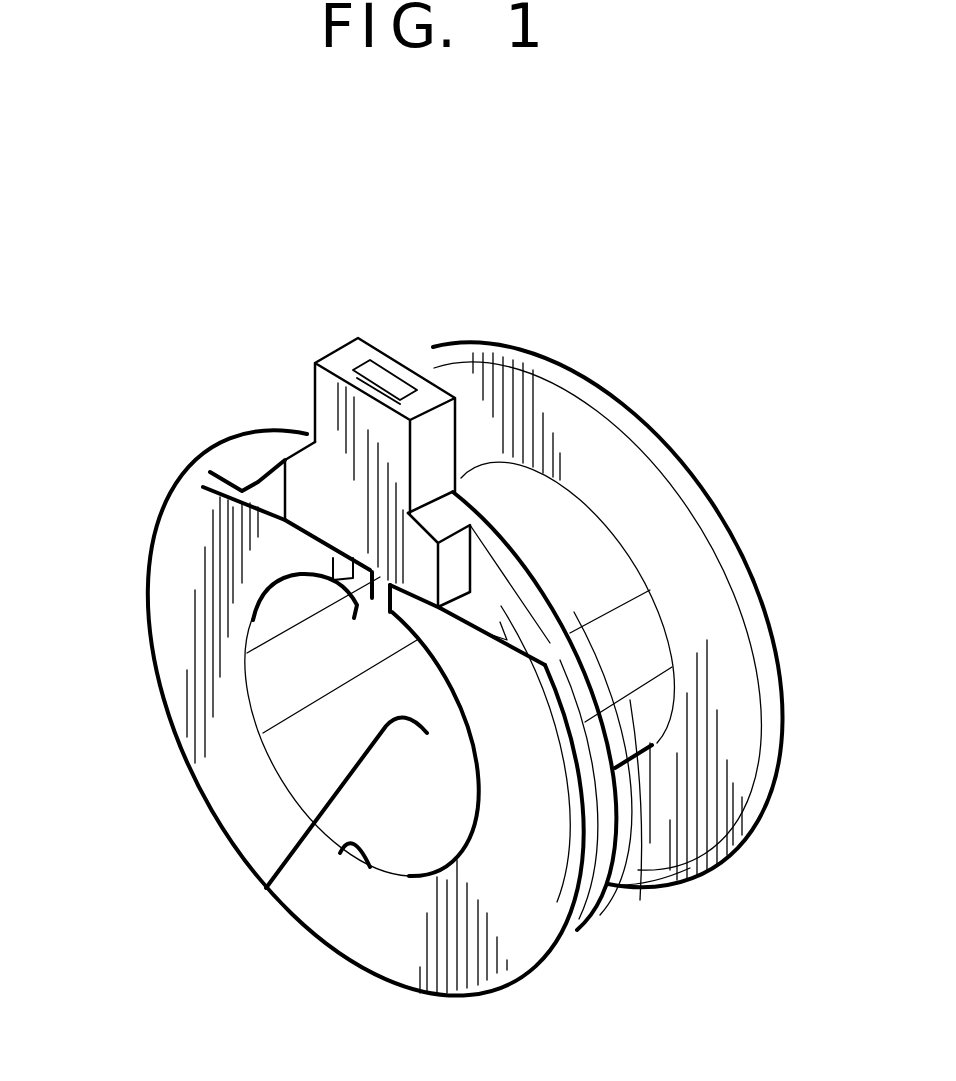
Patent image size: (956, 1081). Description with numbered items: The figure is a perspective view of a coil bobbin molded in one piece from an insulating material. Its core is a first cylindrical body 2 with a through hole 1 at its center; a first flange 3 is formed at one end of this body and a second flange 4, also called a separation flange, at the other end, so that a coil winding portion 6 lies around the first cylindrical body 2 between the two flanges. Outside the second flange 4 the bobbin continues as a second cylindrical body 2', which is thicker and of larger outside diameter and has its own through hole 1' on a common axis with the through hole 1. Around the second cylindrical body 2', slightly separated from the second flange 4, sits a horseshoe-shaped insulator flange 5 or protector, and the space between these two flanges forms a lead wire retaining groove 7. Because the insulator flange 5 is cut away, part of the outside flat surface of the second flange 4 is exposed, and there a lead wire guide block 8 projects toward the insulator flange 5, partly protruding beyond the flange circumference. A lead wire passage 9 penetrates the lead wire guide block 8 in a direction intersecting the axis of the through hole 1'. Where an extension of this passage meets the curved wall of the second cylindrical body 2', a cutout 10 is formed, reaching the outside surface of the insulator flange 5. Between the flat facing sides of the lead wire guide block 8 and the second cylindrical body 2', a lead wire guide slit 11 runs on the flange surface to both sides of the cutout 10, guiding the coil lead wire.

The through hole 1 is at (280, 858).
The through hole 1' is at (314, 936).
The first cylindrical body 2 is at (658, 841).
The second cylindrical body 2' is at (534, 777).
The first flange 3 is at (693, 870).
The second flange 4 is at (600, 897).
The insulator flange 5 is at (243, 803).
The coil winding portion 6 is at (551, 440).
The lead wire retaining groove 7 is at (571, 690).
The lead wire guide block 8 is at (303, 537).
The lead wire passage 9 is at (387, 372).
The cutout 10 is at (275, 613).
The lead wire guide slit 11 is at (303, 536).